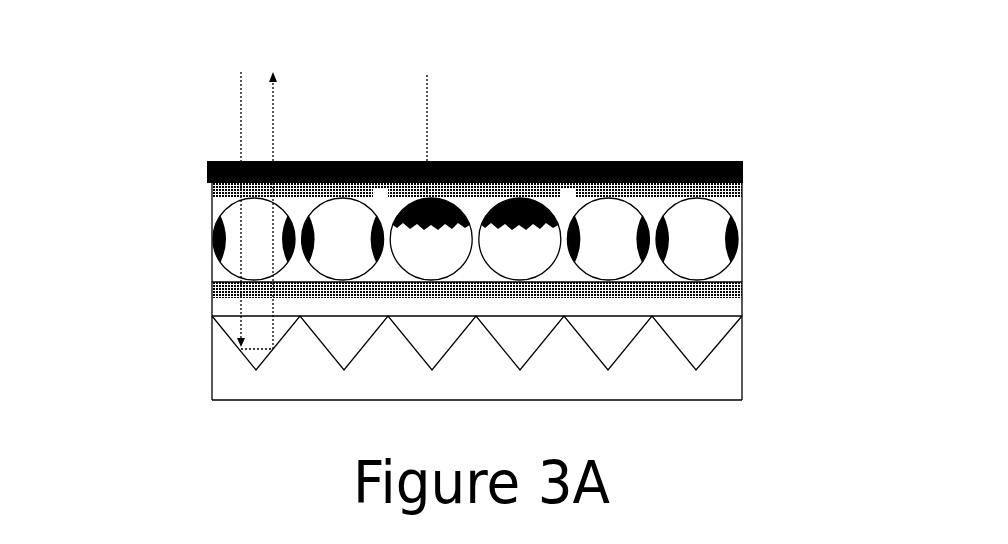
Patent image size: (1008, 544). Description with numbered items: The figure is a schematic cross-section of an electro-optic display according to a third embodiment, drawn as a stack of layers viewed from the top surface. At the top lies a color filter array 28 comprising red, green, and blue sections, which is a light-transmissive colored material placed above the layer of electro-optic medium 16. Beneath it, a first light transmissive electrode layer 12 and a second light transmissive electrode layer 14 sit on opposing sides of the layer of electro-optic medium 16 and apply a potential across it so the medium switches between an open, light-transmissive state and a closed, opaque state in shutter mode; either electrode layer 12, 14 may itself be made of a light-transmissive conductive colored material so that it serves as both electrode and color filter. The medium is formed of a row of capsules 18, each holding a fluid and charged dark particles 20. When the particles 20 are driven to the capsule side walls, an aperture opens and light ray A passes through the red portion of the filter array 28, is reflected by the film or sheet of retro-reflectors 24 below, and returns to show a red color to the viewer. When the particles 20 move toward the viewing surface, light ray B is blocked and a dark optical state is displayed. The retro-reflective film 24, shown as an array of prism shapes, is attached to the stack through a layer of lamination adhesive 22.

The color filter array 28 is at (617, 161).
The first light transmissive electrode layer 12 is at (212, 190).
The capsule 18 is at (742, 203).
The dark particles 20 is at (212, 238).
The layer of electro-optic medium 16 is at (742, 271).
The second light transmissive electrode layer 14 is at (212, 284).
The layer of lamination adhesive 22 is at (742, 307).
The film or sheet comprising an array of retro-reflectors 24 is at (212, 350).
The light ray A is at (253, 192).
The light ray B is at (427, 118).